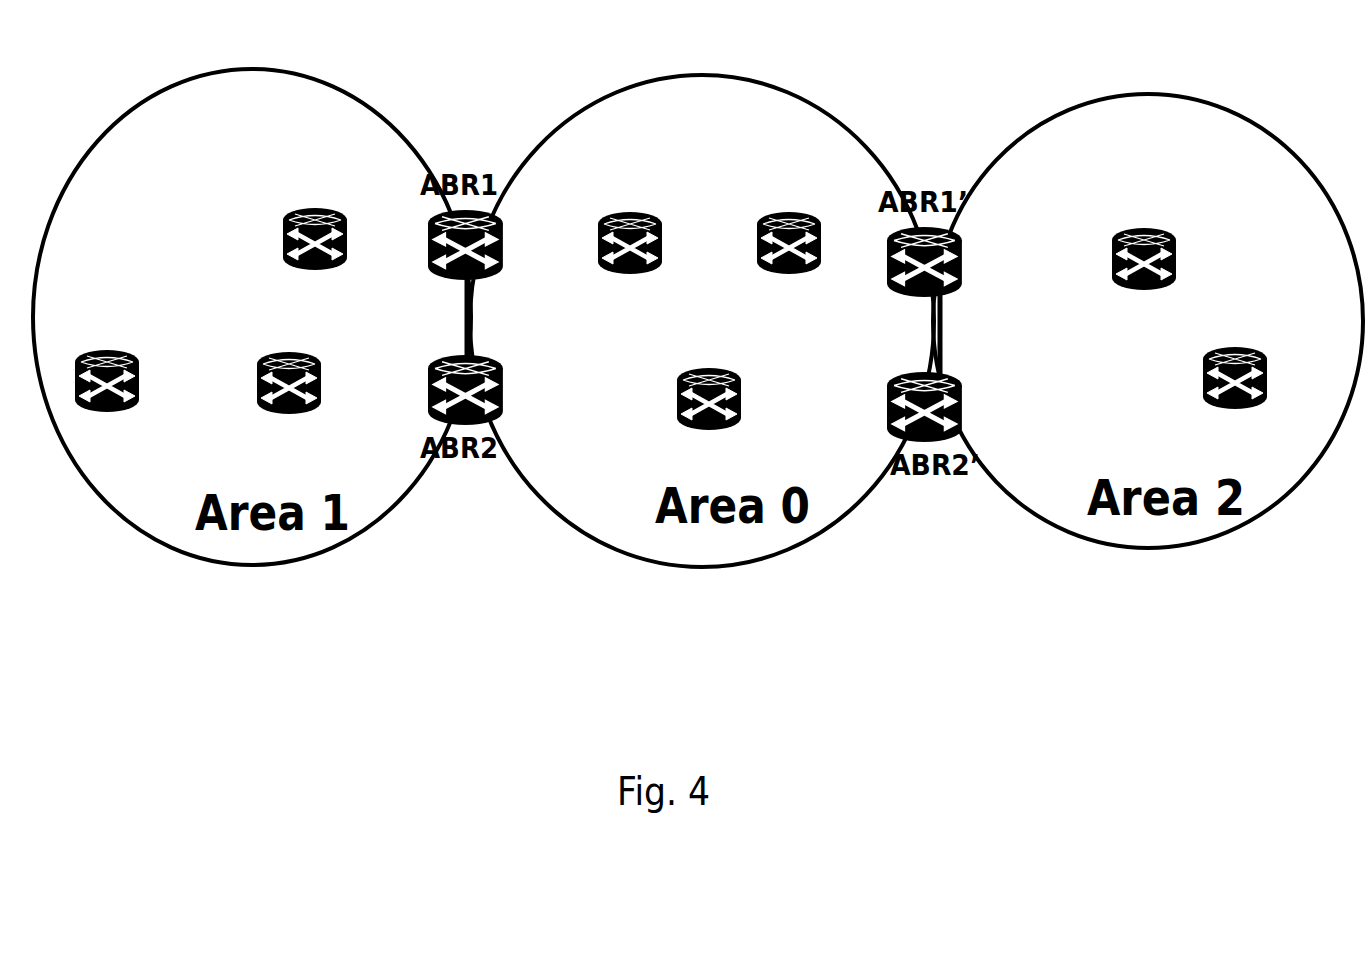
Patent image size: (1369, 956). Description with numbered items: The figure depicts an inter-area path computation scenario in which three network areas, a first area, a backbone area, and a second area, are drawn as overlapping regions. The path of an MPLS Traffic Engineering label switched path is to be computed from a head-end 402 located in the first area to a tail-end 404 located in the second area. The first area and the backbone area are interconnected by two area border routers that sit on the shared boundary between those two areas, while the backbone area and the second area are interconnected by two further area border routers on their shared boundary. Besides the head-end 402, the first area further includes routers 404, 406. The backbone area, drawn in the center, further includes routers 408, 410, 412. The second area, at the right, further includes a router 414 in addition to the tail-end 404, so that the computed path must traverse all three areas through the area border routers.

The head-end 402 is at (140, 361).
The tail-end 404 is at (348, 219).
The router 406 is at (322, 363).
The router 408 is at (663, 223).
The router 410 is at (850, 209).
The router 412 is at (742, 379).
The router 414 is at (1177, 239).